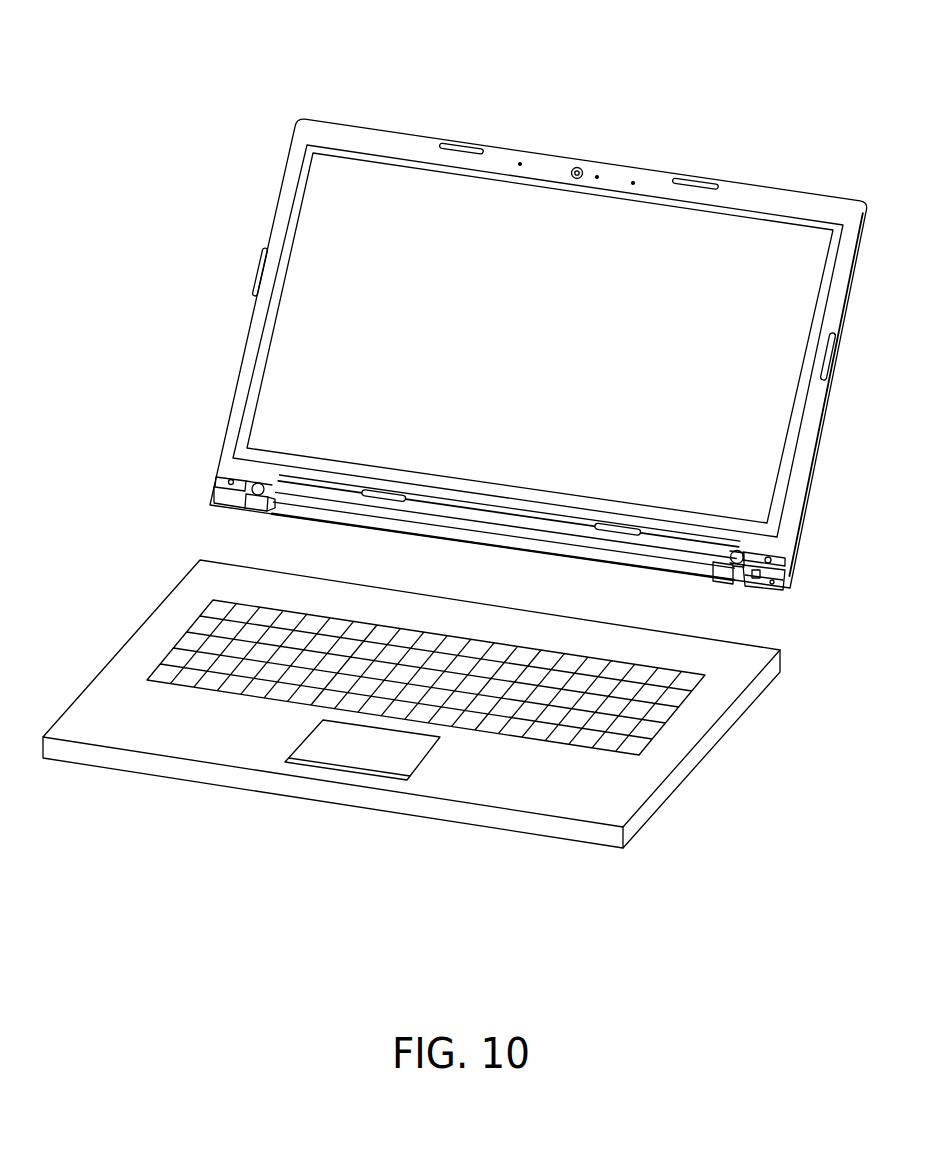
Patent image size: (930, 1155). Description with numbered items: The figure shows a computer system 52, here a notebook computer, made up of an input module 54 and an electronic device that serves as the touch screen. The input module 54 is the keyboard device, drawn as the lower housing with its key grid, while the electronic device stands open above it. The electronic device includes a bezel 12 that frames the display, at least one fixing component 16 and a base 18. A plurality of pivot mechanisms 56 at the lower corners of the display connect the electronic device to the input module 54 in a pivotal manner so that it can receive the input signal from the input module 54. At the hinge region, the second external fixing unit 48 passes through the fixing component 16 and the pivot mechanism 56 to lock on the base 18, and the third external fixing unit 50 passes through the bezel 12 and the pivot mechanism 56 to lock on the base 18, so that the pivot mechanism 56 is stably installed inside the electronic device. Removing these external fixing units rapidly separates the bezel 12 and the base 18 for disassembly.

The computer system 52 is at (718, 72).
The input module 54 is at (702, 750).
The pivot mechanism 56 is at (253, 503).
The third external fixing unit 50 is at (737, 551).
The bezel 12 is at (747, 553).
The second external fixing unit 48 is at (766, 558).
The fixing component 16 is at (785, 562).
The base 18 is at (774, 591).